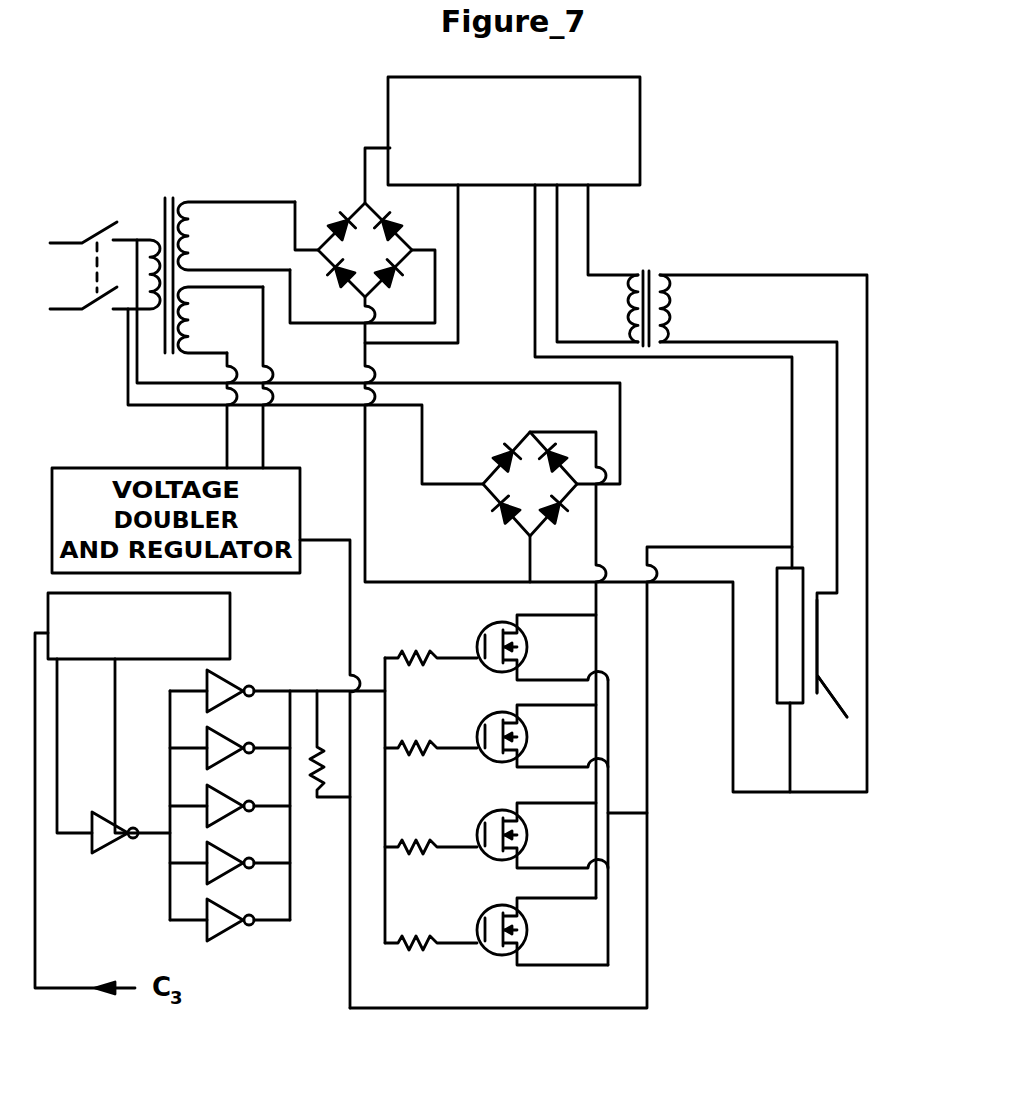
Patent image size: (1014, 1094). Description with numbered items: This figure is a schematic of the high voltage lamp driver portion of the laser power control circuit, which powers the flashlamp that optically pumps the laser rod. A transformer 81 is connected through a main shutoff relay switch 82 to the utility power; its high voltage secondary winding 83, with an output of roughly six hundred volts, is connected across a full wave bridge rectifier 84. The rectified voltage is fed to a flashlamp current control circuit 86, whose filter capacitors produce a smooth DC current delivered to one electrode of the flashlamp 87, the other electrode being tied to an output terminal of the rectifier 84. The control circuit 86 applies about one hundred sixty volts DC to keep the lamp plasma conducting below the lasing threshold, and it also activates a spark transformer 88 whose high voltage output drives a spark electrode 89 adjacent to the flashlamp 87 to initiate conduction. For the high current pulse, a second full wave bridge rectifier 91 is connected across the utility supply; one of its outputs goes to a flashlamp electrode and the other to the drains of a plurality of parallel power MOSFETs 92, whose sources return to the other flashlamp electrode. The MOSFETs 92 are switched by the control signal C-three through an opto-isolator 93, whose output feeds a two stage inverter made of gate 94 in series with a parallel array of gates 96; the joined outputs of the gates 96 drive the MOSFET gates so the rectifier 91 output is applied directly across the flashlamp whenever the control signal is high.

The transformer 81 is at (153, 225).
The main shutoff relay switch 82 is at (113, 292).
The high voltage secondary winding 83 is at (187, 195).
The full wave bridge rectifier 84 is at (333, 220).
The flashlamp current control circuit 86 is at (640, 133).
The flashlamp 87 is at (787, 683).
The spark transformer 88 is at (655, 270).
The spark electrode 89 is at (847, 717).
The full wave bridge rectifier 91 is at (567, 462).
The power MOSFETs 92 is at (524, 650).
The opto-isolator 93 is at (212, 632).
The gate 94 is at (102, 842).
The gates 96 is at (227, 807).